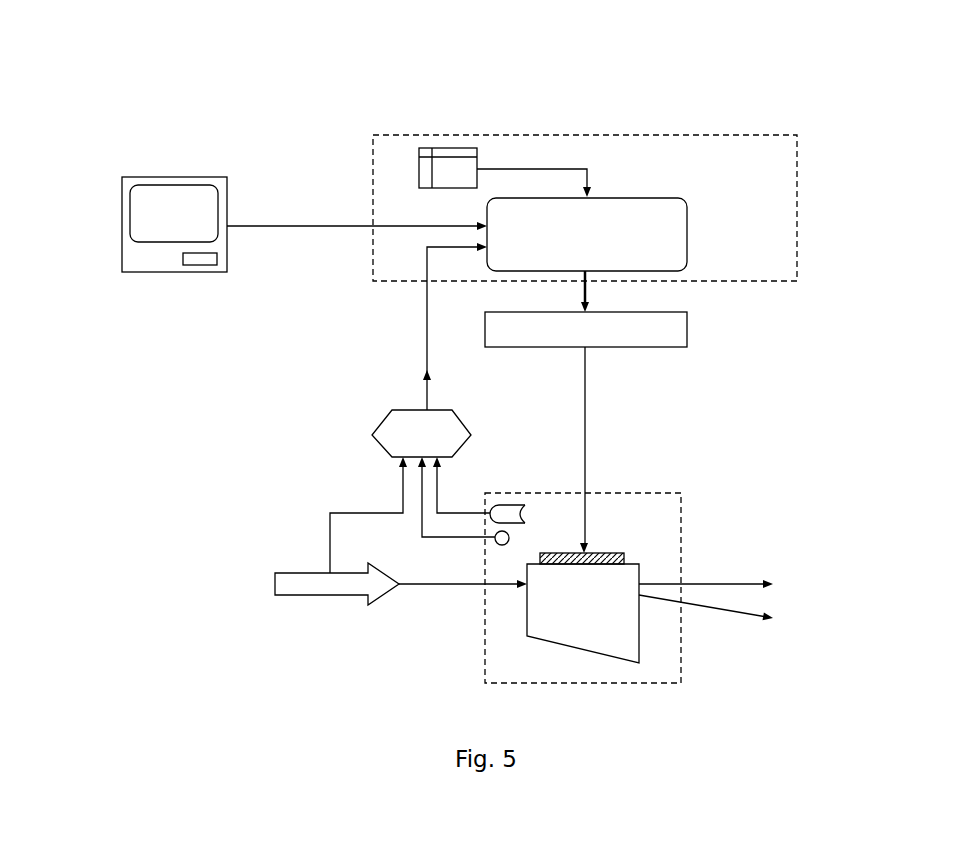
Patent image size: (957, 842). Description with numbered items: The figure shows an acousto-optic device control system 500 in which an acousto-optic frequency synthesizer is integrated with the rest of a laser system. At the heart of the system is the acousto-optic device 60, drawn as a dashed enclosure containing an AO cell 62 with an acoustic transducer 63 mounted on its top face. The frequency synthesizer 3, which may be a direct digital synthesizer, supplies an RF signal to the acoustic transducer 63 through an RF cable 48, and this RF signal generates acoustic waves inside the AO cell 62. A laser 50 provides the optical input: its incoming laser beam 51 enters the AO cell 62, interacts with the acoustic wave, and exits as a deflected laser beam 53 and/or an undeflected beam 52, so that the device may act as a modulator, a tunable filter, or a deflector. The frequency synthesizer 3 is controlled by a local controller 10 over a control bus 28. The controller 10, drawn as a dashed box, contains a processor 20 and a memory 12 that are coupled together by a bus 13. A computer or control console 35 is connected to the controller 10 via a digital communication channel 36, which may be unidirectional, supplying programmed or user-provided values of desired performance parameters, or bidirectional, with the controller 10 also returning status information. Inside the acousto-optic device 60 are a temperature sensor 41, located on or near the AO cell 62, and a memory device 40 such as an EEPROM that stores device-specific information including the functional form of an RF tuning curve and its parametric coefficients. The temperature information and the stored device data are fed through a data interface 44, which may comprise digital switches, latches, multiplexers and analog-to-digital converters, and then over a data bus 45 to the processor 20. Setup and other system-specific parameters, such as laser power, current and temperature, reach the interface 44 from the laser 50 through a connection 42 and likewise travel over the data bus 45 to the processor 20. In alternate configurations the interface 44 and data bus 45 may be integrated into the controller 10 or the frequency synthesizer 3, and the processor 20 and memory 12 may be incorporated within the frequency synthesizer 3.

The acousto-optic device control system 500 is at (262, 40).
The local controller 10 is at (522, 135).
The memory 12 is at (445, 188).
The bus 13 is at (517, 166).
The processor 20 is at (680, 225).
The control bus 28 is at (592, 285).
The frequency synthesizer 3 is at (687, 330).
The computer or control console 35 is at (122, 223).
The digital communication channel 36 is at (310, 223).
The data bus 45 is at (425, 387).
The data interface 44 is at (378, 447).
The memory device 40 is at (512, 497).
The temperature sensor 41 is at (493, 542).
The connection 42 is at (330, 537).
The laser 50 is at (318, 572).
The incoming laser beam 51 is at (453, 585).
The RF cable 48 is at (585, 478).
The acousto-optic device 60 is at (482, 643).
The AO cell 62 is at (545, 643).
The acoustic transducer 63 is at (603, 553).
The undeflected beam 52 is at (742, 581).
The deflected laser beam 53 is at (743, 616).